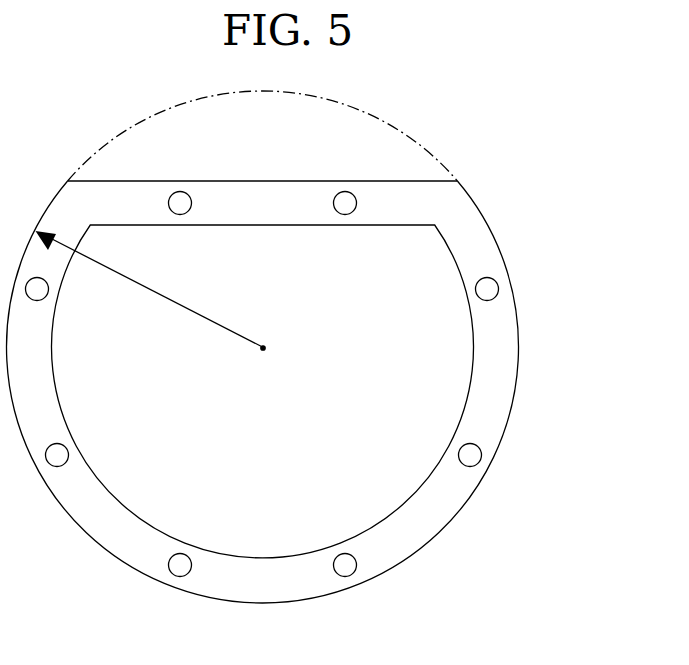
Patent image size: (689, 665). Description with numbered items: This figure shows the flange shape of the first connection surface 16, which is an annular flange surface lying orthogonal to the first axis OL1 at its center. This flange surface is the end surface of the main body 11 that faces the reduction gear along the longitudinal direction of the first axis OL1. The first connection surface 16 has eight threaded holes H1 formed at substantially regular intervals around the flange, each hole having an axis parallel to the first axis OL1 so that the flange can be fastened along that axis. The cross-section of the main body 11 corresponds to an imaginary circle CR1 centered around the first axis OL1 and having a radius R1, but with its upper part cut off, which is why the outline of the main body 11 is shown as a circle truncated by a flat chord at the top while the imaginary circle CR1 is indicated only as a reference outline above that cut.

The imaginary circle CR1 is at (113, 140).
The main body 11 is at (506, 172).
The first connection surface 16 is at (485, 390).
The threaded holes H1 is at (499, 289).
The radius R1 is at (149, 289).
The first axis OL1 is at (265, 348).